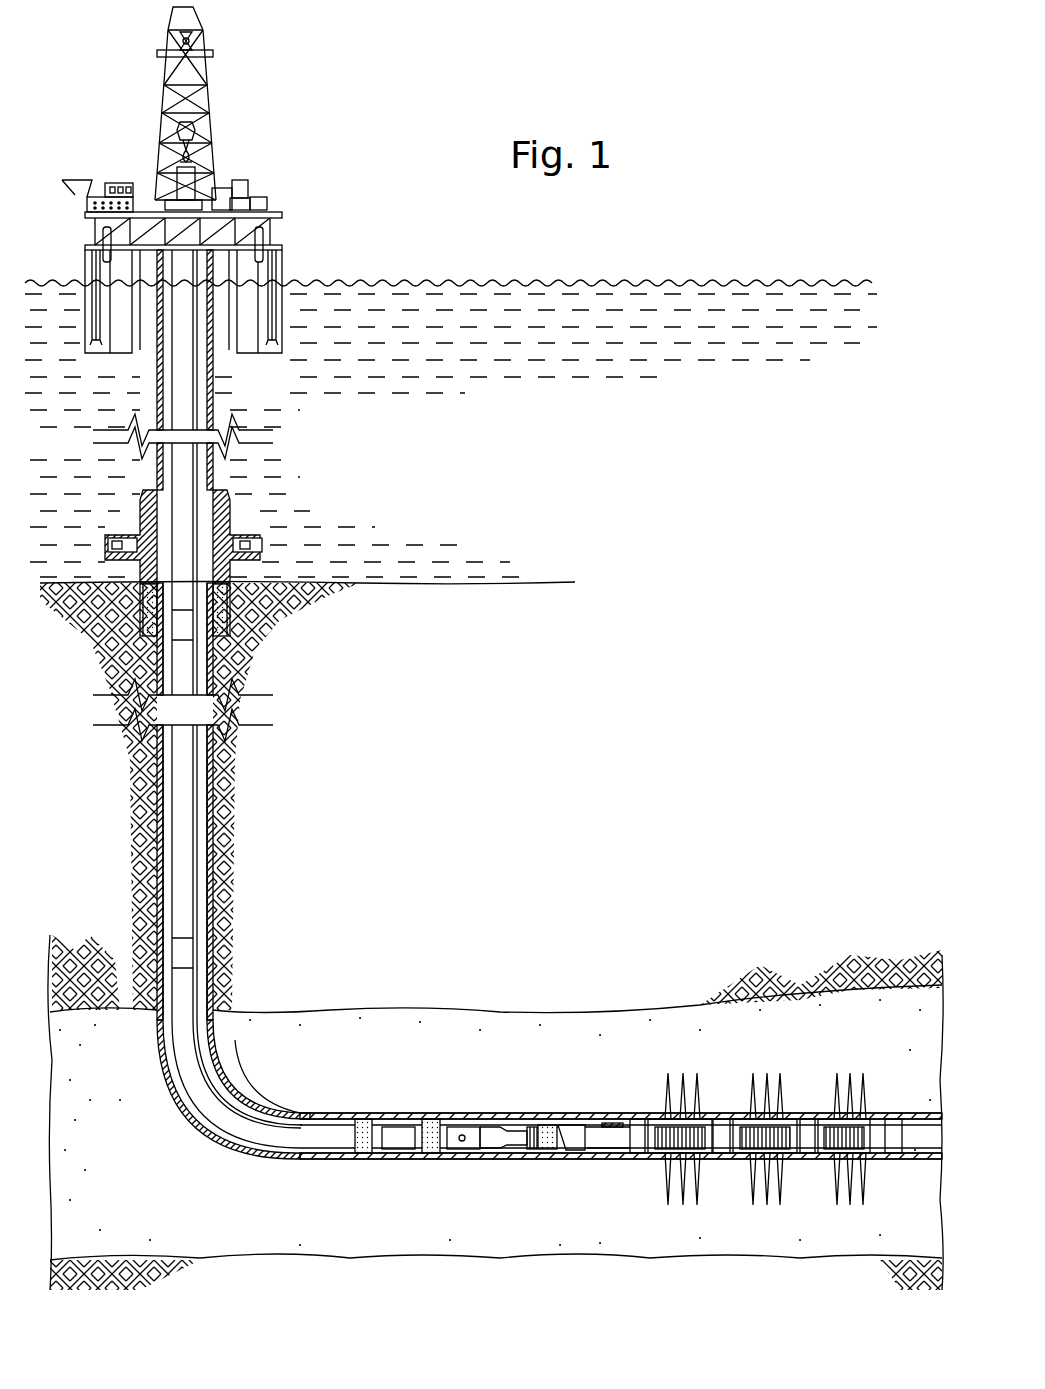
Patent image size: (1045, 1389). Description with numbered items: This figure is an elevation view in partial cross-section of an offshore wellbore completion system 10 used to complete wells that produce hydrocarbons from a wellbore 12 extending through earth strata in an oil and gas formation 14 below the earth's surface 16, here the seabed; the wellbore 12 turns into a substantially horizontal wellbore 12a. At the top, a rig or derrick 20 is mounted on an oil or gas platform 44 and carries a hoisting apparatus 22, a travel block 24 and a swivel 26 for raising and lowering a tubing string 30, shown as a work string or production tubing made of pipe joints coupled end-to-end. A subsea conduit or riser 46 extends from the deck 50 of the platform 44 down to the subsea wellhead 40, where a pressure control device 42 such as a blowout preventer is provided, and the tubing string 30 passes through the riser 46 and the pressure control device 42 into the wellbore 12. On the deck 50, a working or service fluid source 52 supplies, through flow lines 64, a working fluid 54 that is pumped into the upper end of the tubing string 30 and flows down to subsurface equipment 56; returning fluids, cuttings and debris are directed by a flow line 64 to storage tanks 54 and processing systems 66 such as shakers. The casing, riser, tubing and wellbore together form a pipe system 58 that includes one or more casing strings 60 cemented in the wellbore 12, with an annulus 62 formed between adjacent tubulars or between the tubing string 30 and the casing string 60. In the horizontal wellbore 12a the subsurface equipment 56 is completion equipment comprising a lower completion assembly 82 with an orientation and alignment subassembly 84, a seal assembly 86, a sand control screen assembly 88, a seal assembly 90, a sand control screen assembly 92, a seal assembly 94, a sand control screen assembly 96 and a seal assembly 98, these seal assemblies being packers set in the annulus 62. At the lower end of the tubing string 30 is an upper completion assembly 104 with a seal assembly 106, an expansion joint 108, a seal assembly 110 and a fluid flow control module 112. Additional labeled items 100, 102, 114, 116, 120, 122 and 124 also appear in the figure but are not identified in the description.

The wellbore completion system 10 is at (96, 55).
The wellbore 12 is at (222, 846).
The horizontal wellbore 12a is at (921, 1170).
The oil and gas formation 14 is at (442, 786).
The earth's surface 16 is at (540, 582).
The rig or derrick 20 is at (204, 75).
The hoisting apparatus 22 is at (178, 42).
The travel block 24 is at (178, 133).
The swivel 26 is at (175, 172).
The tubing string 30 is at (172, 360).
The wellhead 40 is at (130, 494).
The pressure control device 42 is at (244, 545).
The oil or gas platform 44 is at (283, 228).
The subsea conduit or riser 46 is at (210, 395).
The deck 50 is at (283, 213).
The working or service fluid source 52 is at (240, 182).
The working fluid 54 is at (248, 204).
The subsurface equipment 56 is at (490, 1096).
The pipe system 58 is at (155, 866).
The casing string 60 is at (150, 615).
The annulus 62 is at (160, 882).
The flow line 64 is at (222, 188).
The processing system 66 is at (267, 205).
The lower completion assembly 82 is at (802, 1098).
The orientation and alignment subassembly 84 is at (575, 1128).
The seal assembly 86 is at (630, 1145).
The sand control screen assembly 88 is at (650, 1160).
The seal assembly 90 is at (720, 1153).
The sand control screen assembly 92 is at (748, 1122).
The seal assembly 94 is at (806, 1153).
The sand control screen assembly 96 is at (885, 1153).
The seal assembly 98 is at (882, 1122).
The packer 100 is at (635, 1123).
The ports 102 is at (612, 1124).
The upper completion assembly 104 is at (370, 1175).
The seal assembly 106 is at (360, 1118).
The expansion joint 108 is at (400, 1147).
The seal assembly 110 is at (428, 1118).
The fluid flow control module 112 is at (462, 1150).
The tubing string 114 is at (562, 1162).
The casing 116 is at (285, 1118).
The seal 120 is at (548, 1130).
The seal assembly 122 is at (500, 1158).
The ring 124 is at (527, 1128).